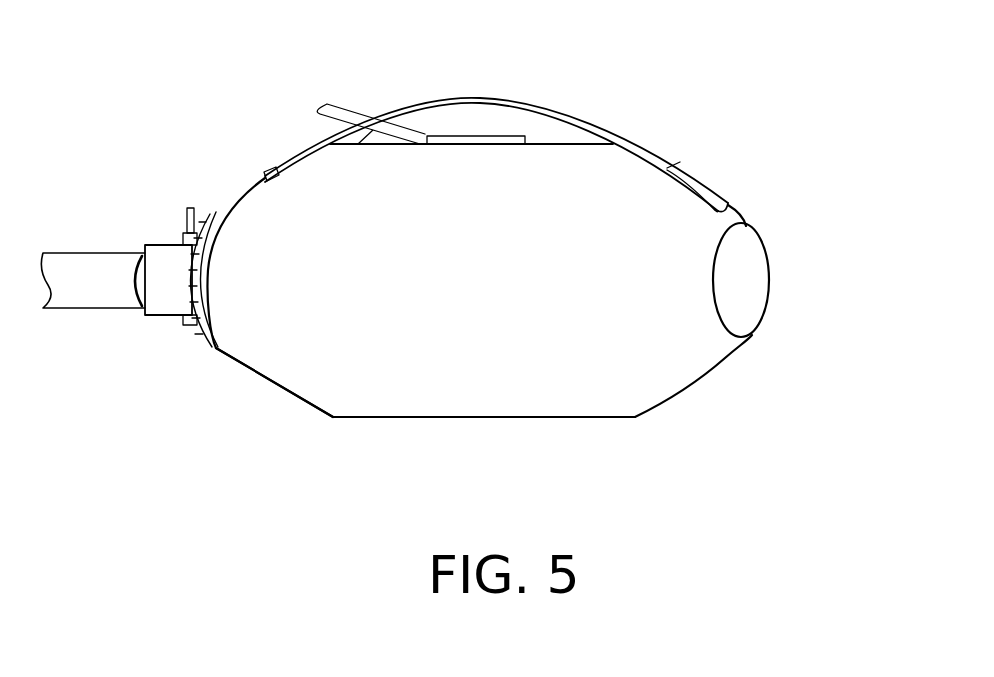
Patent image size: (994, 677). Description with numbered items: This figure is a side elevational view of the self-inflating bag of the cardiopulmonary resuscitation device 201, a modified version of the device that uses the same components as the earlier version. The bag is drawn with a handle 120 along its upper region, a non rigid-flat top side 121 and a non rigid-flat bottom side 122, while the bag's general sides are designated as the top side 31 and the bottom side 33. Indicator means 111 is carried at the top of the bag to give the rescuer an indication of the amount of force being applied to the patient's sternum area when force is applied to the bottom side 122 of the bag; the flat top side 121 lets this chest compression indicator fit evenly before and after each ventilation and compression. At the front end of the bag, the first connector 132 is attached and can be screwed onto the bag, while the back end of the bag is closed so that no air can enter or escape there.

The cardiopulmonary resuscitation device 201 is at (758, 393).
The non rigid-flat bottom side 122 is at (512, 417).
The bottom side 33 is at (325, 387).
The non rigid-flat top side 121 is at (580, 144).
The indicator means 111 is at (467, 135).
The handle 120 is at (548, 107).
The top side 31 is at (697, 272).
The first connector 132 is at (163, 245).